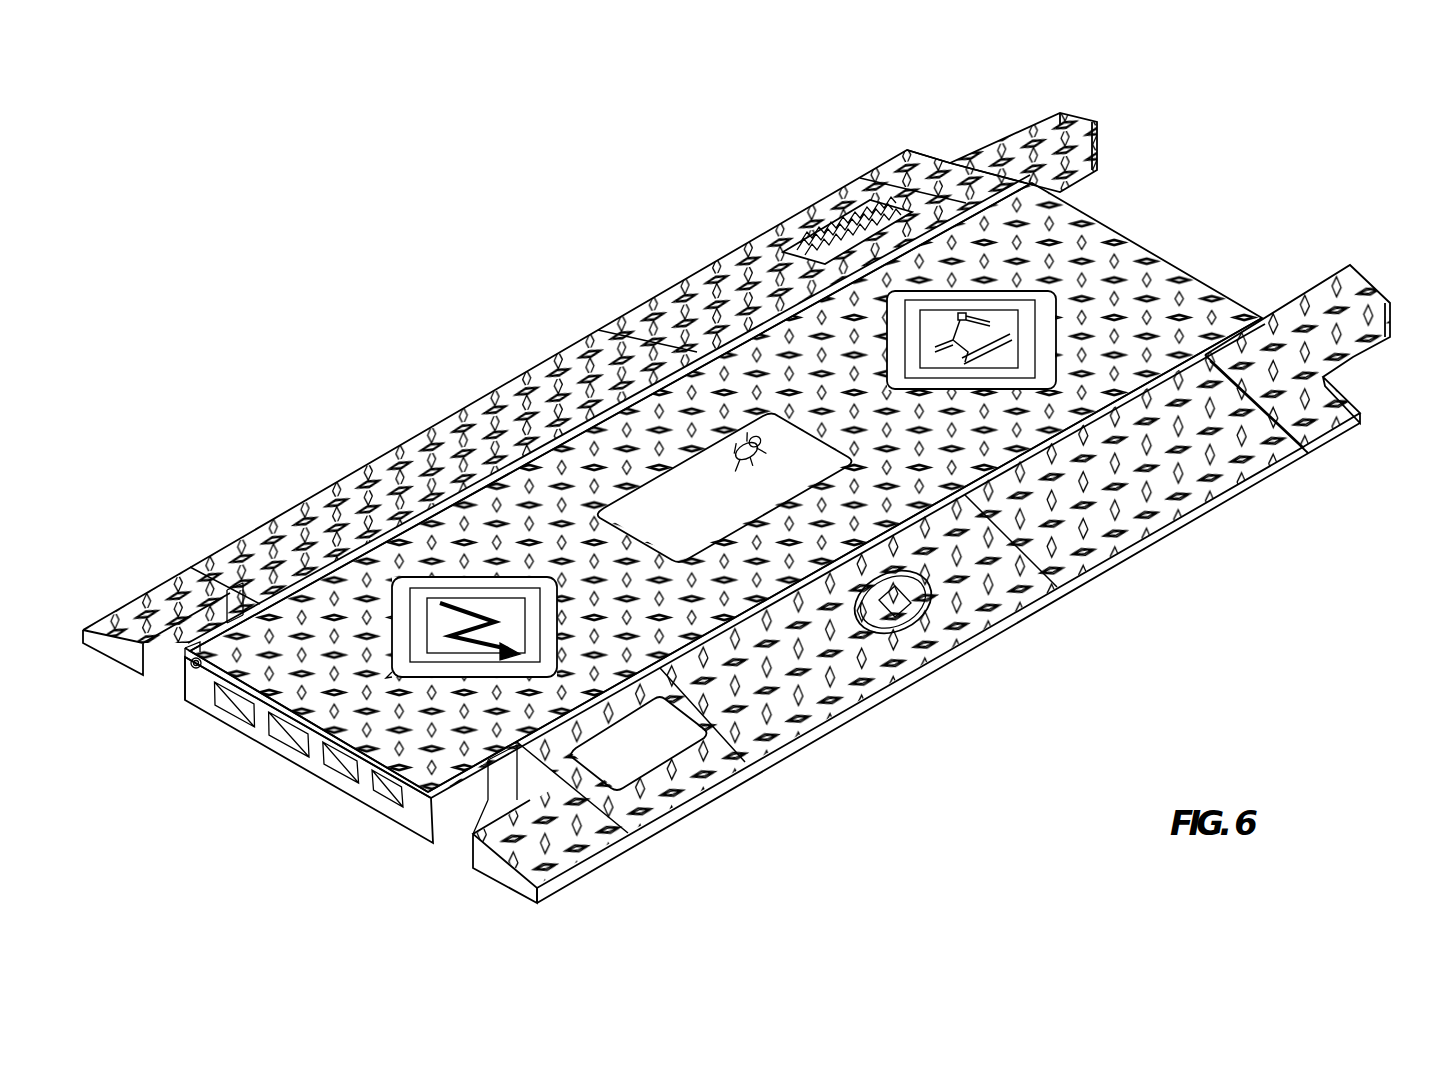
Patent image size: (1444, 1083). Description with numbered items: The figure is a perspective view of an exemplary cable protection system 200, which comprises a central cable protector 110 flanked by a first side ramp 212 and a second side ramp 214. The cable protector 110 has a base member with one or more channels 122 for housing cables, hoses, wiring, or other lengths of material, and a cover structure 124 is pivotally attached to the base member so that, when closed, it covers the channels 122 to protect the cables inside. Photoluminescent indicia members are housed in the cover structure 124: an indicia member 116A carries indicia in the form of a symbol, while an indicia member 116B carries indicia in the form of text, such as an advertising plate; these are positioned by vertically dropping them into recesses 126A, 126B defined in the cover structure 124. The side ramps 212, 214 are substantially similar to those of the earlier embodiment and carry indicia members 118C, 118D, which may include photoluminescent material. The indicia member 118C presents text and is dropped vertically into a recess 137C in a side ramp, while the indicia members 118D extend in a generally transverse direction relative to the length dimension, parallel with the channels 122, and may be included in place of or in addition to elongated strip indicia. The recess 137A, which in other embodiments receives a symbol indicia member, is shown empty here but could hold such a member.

The cable protection system 200 is at (1175, 134).
The cable protector 110 is at (1226, 291).
The second side ramp 214 is at (957, 153).
The first side ramp 212 is at (1358, 398).
The indicia member 116A is at (1043, 327).
The indicia member 116B is at (640, 450).
The recess 126A is at (1058, 293).
The recess 126B is at (590, 493).
The indicia member 118C is at (790, 230).
The indicia member 118D is at (883, 162).
The recess 137A is at (930, 625).
The recess 137C is at (765, 245).
The channels 122 is at (303, 747).
The cover structure 124 is at (383, 783).